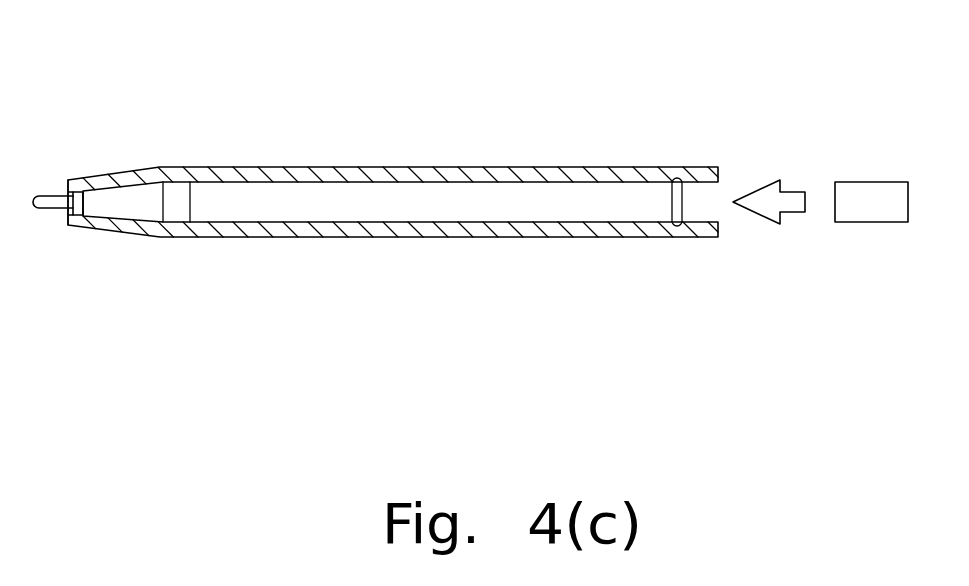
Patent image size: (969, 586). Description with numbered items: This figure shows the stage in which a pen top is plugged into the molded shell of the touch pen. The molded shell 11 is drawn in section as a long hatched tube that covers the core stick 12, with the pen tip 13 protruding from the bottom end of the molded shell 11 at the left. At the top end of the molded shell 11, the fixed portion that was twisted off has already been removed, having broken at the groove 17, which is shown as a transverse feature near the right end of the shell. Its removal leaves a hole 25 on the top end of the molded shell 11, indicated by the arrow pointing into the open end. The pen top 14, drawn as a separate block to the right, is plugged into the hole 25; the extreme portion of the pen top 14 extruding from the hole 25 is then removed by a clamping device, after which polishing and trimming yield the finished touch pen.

The molded shell 11 is at (510, 167).
The core stick 12 is at (385, 167).
The pen tip 13 is at (62, 178).
The pen top 14 is at (878, 200).
The groove 17 is at (675, 170).
The hole 25 is at (700, 202).